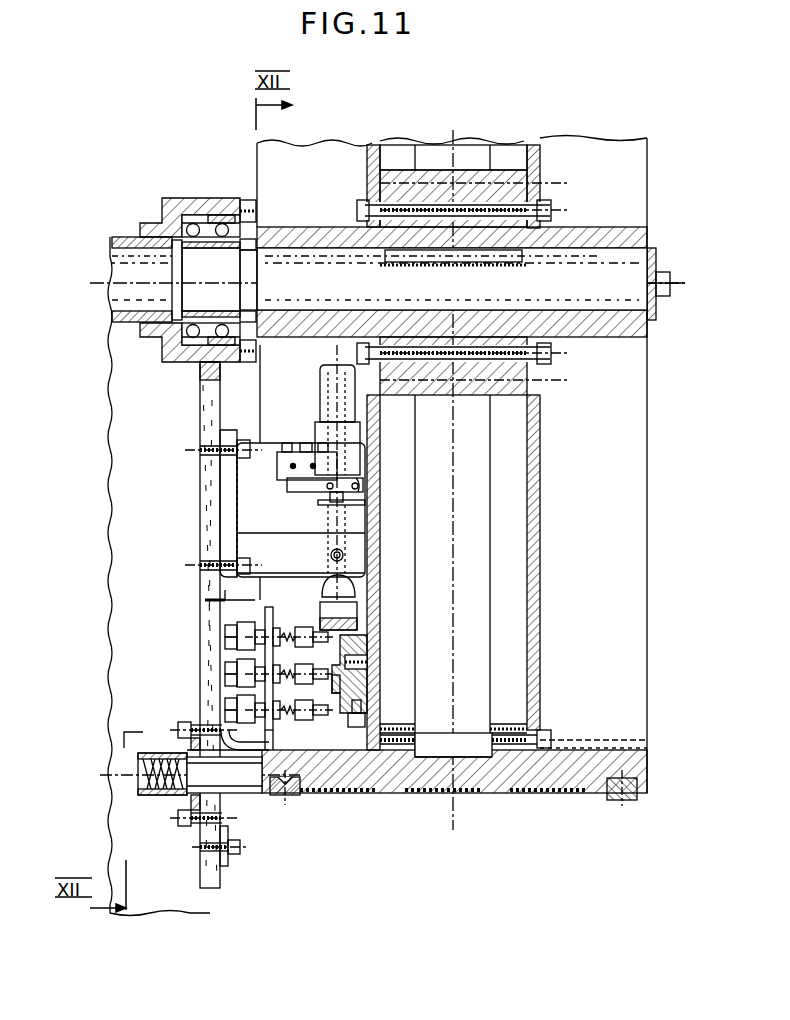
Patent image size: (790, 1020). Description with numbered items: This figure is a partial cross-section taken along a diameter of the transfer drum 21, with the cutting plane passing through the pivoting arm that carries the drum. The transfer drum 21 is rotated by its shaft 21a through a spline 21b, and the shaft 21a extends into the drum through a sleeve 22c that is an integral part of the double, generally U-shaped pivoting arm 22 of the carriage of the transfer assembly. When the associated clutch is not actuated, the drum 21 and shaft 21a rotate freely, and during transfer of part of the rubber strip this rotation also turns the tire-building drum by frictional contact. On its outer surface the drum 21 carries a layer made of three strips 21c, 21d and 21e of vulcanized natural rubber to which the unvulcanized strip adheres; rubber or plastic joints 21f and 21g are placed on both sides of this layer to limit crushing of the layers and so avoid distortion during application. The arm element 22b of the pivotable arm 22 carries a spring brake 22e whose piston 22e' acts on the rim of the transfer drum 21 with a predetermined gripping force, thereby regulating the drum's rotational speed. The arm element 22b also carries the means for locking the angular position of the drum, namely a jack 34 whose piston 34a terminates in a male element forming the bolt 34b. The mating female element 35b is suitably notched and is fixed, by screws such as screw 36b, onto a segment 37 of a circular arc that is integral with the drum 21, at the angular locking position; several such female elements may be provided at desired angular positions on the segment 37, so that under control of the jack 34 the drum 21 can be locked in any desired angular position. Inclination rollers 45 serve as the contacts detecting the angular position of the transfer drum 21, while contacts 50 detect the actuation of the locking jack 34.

The transfer drum 21 is at (648, 176).
The shaft 21a is at (516, 295).
The spline 21b is at (434, 263).
The strip of vulcanized natural rubber 21c is at (375, 795).
The strip of vulcanized natural rubber 21d is at (458, 794).
The strip of vulcanized natural rubber 21e is at (547, 794).
The joint 21f is at (298, 795).
The joint 21g is at (624, 798).
The double generally U-shaped arm 22 is at (105, 582).
The arm element 22b is at (215, 648).
The sleeve 22c is at (122, 240).
The spring brake 22e is at (200, 749).
The piston 22e' is at (247, 801).
The jack 34 is at (325, 384).
The piston 34a is at (325, 497).
The bolt 34b is at (355, 590).
The female element 35b is at (357, 612).
The screw 36b is at (349, 718).
The segment of a circular arc 37 is at (363, 664).
The inclination rollers 45 is at (302, 625).
The contacts 50 is at (364, 490).